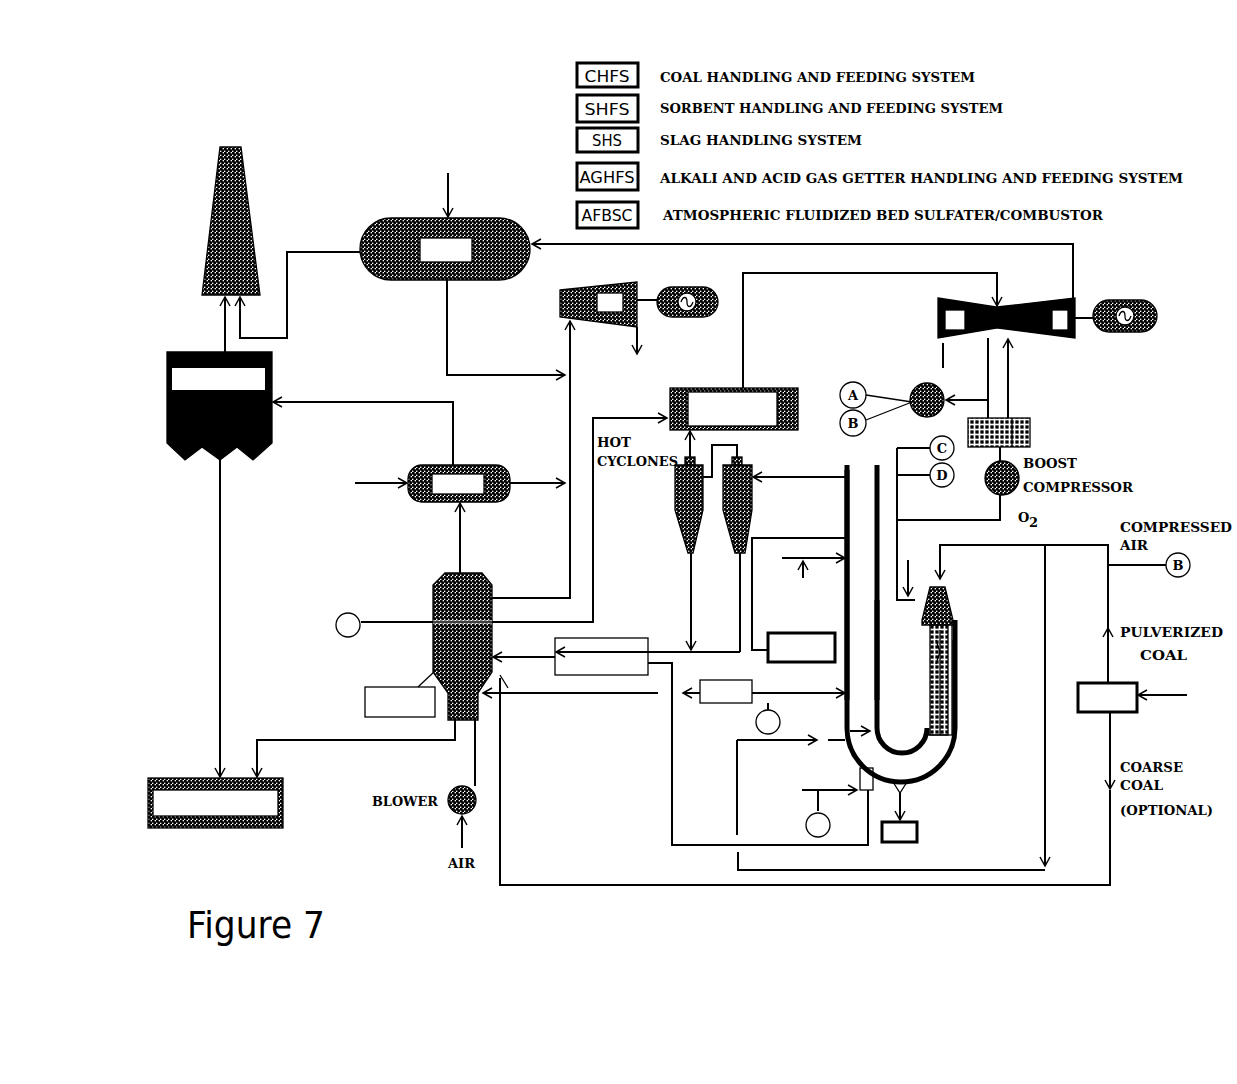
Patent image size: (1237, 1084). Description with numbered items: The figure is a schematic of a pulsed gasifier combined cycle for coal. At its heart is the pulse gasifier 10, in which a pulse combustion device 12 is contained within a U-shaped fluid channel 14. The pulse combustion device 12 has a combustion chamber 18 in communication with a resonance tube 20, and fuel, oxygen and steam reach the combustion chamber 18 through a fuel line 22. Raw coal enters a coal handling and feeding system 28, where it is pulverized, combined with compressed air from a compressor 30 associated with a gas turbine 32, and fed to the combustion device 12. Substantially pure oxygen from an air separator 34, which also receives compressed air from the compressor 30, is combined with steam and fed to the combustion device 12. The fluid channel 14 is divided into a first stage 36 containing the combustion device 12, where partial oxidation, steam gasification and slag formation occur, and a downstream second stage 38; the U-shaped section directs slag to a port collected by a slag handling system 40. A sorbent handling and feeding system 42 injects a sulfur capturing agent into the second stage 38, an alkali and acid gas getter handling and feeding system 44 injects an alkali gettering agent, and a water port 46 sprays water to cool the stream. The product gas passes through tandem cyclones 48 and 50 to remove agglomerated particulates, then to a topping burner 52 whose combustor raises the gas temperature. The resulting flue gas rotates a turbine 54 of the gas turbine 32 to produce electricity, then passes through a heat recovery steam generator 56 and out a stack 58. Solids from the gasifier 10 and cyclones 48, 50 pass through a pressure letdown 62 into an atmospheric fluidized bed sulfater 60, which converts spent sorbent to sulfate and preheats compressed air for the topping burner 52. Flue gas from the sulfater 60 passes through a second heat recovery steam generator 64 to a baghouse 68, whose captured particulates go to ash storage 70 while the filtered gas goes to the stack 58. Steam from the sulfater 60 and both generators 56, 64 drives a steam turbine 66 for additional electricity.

The pulse gasifier 10 is at (940, 772).
The pulse combustion device 12 is at (953, 642).
The fluid channel 14 is at (880, 688).
The combustion chamber 18 is at (955, 650).
The resonance tube 20 is at (955, 720).
The fuel line 22 is at (942, 580).
The coal handling and feeding system 28 is at (1140, 712).
The compressor 30 is at (938, 320).
The gas turbine 32 is at (1091, 285).
The air separator 34 is at (1030, 433).
The first stage 36 is at (955, 692).
The second stage 38 is at (877, 615).
The slag handling system 40 is at (918, 830).
The sorbent handling and feeding system 42 is at (715, 703).
The alkali and acid gas getter handling and feeding system 44 is at (800, 633).
The water port 46 is at (818, 558).
The cyclone 48 is at (752, 507).
The cyclone 50 is at (673, 515).
The topping burner 52 is at (755, 431).
The turbine 54 is at (1075, 336).
The heat recovery steam generator 56 is at (410, 218).
The stack 58 is at (209, 235).
The atmospheric fluidized bed sulfater 60 is at (433, 657).
The pressure letdown 62 is at (620, 638).
The heat recovery steam generator 64 is at (413, 503).
The steam turbine 66 is at (585, 288).
The baghouse 68 is at (176, 455).
The ash storage 70 is at (283, 805).